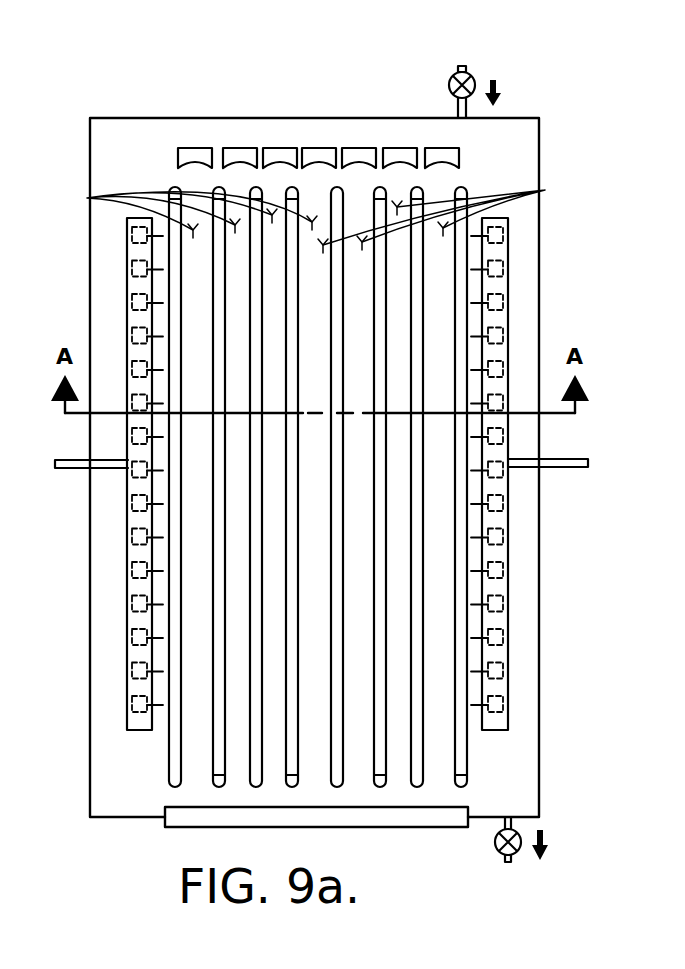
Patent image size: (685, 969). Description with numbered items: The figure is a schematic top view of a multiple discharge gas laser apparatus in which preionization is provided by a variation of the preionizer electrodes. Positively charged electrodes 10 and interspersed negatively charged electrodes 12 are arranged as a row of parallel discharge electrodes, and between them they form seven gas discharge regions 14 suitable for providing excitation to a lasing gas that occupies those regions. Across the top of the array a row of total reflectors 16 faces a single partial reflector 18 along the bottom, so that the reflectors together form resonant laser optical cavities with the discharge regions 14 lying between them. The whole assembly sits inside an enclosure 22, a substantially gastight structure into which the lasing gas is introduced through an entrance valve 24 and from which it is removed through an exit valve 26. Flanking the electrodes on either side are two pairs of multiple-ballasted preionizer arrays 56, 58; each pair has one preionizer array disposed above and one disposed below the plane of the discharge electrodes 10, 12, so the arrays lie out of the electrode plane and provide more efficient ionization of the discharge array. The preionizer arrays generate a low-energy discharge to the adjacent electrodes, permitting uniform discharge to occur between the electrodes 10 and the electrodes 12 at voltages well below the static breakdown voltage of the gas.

The positively charged electrodes 10 is at (290, 757).
The negatively charged electrodes 12 is at (257, 655).
The gas discharge regions 14 is at (87, 198).
The total reflectors 16 is at (313, 148).
The partial reflector 18 is at (165, 822).
The enclosure 22 is at (539, 560).
The entrance valve 24 is at (475, 75).
The exit valve 26 is at (500, 852).
The multiple-ballasted preionizer array 56 is at (128, 288).
The multiple-ballasted preionizer array 58 is at (502, 250).